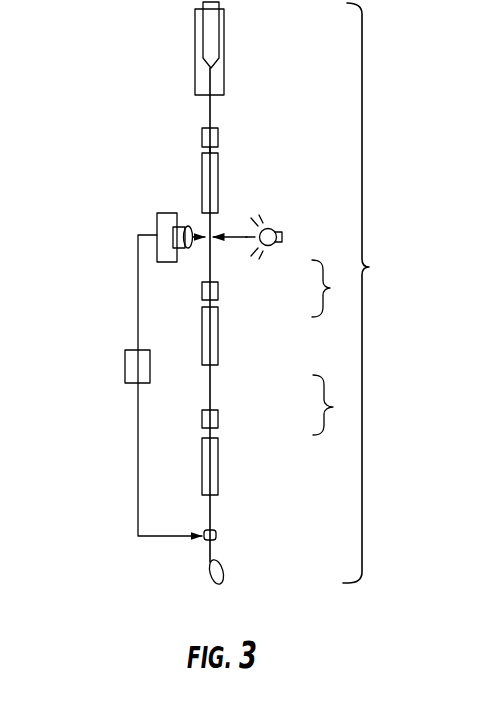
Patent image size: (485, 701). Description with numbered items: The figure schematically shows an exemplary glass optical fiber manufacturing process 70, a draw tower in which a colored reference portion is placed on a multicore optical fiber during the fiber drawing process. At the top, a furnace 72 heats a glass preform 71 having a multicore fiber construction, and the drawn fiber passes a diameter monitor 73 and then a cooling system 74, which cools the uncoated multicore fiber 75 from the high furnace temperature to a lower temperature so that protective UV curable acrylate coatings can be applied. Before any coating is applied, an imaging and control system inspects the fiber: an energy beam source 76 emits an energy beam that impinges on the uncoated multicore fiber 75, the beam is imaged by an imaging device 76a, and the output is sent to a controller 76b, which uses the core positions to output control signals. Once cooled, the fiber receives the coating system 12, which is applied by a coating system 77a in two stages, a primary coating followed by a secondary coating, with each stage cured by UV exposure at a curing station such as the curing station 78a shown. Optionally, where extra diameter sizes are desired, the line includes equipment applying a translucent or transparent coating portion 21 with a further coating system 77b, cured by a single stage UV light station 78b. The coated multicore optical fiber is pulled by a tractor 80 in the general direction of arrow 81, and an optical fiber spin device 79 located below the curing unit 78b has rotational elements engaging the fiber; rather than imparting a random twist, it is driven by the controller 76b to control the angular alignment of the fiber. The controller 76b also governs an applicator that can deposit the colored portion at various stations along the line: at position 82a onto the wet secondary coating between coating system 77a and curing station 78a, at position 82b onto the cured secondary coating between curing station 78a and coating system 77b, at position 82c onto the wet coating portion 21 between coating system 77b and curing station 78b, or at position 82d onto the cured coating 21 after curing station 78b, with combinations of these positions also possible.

The glass optical fiber manufacturing process 70 is at (373, 293).
The glass preform 71 is at (209, 53).
The furnace 72 is at (225, 80).
The diameter monitor 73 is at (220, 132).
The cooling system 74 is at (222, 157).
The uncoated multicore fiber 75 is at (212, 192).
The energy beam source 76 is at (280, 222).
The imaging device 76a is at (157, 213).
The controller 76b is at (125, 372).
The coating system 77a is at (221, 291).
The curing station 78a is at (221, 340).
The coating system 12 is at (330, 288).
The coating system 77b is at (221, 420).
The single stage UV light station 78b is at (221, 468).
The translucent or transparent coating portion 21 is at (333, 407).
The optical fiber spin device 79 is at (218, 529).
The tractor 80 is at (223, 557).
The arrow 81 is at (221, 582).
The position 82a is at (202, 303).
The position 82b is at (205, 385).
The position 82c is at (205, 433).
The position 82d is at (137, 536).